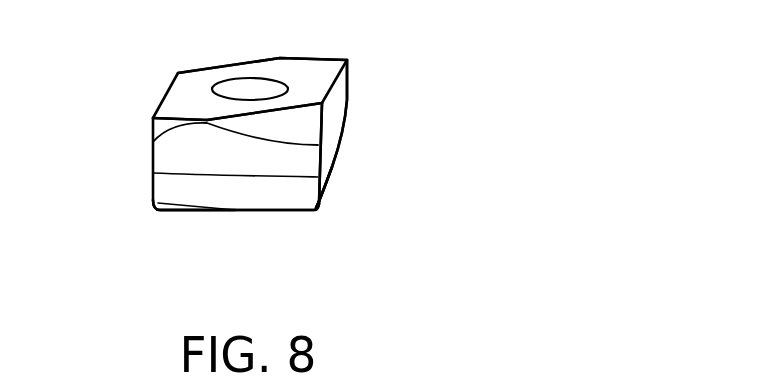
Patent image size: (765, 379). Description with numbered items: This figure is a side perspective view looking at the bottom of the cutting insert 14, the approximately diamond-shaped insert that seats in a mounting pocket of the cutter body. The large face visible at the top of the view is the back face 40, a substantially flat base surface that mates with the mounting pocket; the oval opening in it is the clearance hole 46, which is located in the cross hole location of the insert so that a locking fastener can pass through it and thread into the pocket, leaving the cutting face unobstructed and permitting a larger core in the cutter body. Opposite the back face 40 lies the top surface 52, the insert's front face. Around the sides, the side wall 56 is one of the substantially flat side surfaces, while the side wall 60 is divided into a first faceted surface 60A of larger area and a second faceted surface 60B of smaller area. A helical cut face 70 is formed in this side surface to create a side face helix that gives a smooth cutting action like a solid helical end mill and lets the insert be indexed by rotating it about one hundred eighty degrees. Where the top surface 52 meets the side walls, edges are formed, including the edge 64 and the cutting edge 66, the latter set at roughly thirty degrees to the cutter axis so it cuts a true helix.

The cutting insert 14 is at (368, 78).
The back face 40 is at (308, 74).
The clearance hole 46 is at (250, 86).
The top surface 52 is at (238, 213).
The side wall 56 is at (342, 147).
The side wall 60 is at (217, 160).
The first faceted surface 60A is at (302, 127).
The second faceted surface 60B is at (153, 120).
The edge 64 is at (330, 181).
The cutting edge 66 is at (178, 211).
The helical cut face 70 is at (178, 152).